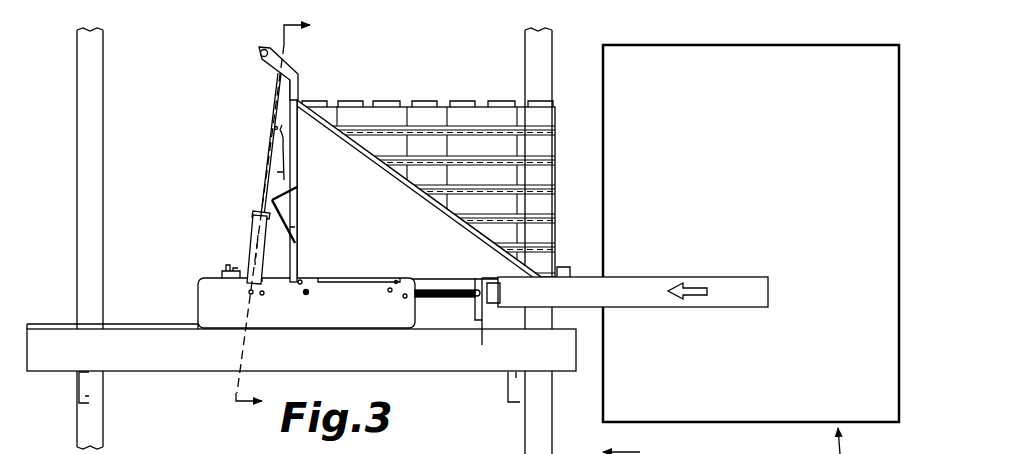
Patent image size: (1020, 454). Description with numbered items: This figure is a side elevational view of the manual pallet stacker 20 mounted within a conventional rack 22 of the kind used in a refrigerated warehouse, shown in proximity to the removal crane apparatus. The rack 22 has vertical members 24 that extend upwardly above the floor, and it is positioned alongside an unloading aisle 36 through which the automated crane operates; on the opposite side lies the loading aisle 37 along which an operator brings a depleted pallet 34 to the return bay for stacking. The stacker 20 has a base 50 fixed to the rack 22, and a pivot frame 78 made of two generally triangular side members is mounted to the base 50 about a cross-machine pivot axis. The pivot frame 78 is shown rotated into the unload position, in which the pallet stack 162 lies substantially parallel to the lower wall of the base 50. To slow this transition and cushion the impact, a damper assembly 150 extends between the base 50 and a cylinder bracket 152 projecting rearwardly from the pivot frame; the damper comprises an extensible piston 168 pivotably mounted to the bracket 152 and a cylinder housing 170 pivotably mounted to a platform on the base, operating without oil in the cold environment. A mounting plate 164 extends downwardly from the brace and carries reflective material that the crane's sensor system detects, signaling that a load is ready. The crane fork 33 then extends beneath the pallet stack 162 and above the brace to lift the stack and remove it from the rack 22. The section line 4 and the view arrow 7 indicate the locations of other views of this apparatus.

The section line 4- 4 is at (263, 212).
The direction of view 7 is at (629, 448).
The manual pallet stacker 20 is at (232, 147).
The rack 22 is at (568, 38).
The vertical members 24 is at (77, 60).
The fork 33 is at (641, 277).
The pallet 34 is at (380, 98).
The unloading aisle 36 is at (580, 348).
The loading aisle 37 is at (190, 282).
The base 50 is at (337, 331).
The pivot frame 78 is at (392, 215).
The damper assembly 150 is at (246, 250).
The cylinder bracket 152 is at (280, 117).
The pallet stack 162 is at (407, 96).
The mounting plate 164 is at (481, 337).
The extensible piston 168 is at (268, 170).
The cylinder housing 170 is at (250, 226).